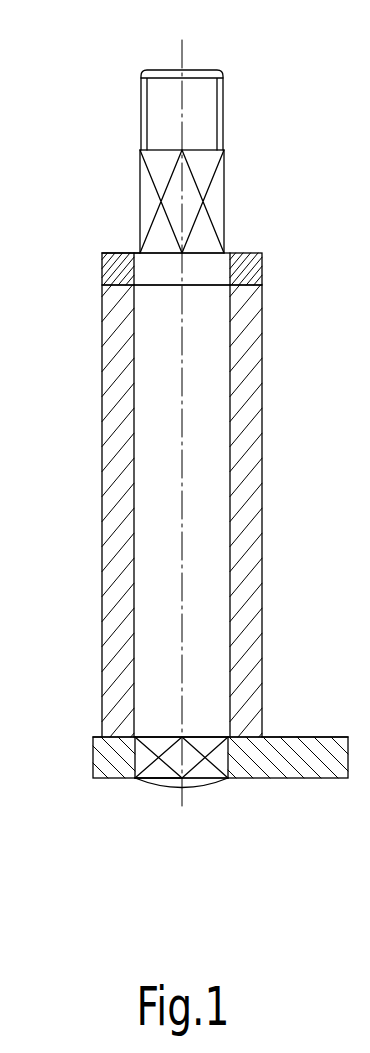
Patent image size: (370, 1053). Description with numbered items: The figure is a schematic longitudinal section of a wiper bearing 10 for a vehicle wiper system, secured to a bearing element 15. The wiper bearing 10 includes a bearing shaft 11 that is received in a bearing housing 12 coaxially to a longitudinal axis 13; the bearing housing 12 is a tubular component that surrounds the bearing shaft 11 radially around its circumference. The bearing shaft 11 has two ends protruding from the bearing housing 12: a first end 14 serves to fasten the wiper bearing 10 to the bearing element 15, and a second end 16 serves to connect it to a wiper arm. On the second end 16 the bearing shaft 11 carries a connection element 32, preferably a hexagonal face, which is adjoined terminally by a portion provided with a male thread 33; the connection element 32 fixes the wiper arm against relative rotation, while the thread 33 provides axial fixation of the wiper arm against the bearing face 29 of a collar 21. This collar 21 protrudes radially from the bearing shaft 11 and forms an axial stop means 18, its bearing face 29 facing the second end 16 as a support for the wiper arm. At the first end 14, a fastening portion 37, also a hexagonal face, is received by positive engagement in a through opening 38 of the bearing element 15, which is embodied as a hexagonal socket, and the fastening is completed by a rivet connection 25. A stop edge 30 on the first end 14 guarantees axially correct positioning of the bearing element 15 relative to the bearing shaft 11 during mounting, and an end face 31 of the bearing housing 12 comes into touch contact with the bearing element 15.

The wiper bearing 10 is at (90, 242).
The bearing shaft 11 is at (202, 448).
The bearing housing 12 is at (240, 506).
The longitudinal axis 13 is at (182, 363).
The first end 14 is at (173, 755).
The bearing element 15 is at (302, 757).
The second end 16 is at (236, 178).
The axial stop means 18 is at (118, 273).
The collar 21 is at (263, 262).
The rivet connection 25 is at (197, 780).
The bearing face 29 is at (125, 253).
The stop edge 30 is at (141, 762).
The end face 31 is at (255, 748).
The connection element 32 is at (187, 213).
The male thread 33 is at (222, 108).
The fastening portion 37 is at (222, 756).
The through opening 38 is at (135, 777).